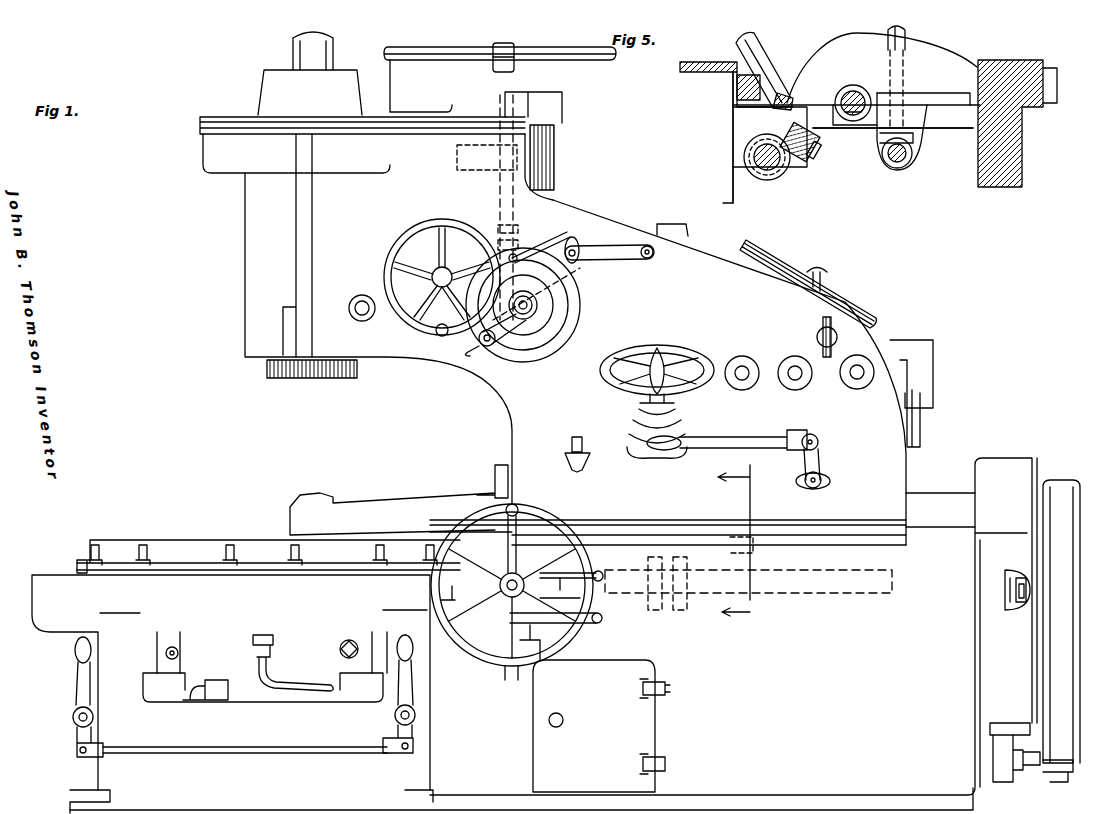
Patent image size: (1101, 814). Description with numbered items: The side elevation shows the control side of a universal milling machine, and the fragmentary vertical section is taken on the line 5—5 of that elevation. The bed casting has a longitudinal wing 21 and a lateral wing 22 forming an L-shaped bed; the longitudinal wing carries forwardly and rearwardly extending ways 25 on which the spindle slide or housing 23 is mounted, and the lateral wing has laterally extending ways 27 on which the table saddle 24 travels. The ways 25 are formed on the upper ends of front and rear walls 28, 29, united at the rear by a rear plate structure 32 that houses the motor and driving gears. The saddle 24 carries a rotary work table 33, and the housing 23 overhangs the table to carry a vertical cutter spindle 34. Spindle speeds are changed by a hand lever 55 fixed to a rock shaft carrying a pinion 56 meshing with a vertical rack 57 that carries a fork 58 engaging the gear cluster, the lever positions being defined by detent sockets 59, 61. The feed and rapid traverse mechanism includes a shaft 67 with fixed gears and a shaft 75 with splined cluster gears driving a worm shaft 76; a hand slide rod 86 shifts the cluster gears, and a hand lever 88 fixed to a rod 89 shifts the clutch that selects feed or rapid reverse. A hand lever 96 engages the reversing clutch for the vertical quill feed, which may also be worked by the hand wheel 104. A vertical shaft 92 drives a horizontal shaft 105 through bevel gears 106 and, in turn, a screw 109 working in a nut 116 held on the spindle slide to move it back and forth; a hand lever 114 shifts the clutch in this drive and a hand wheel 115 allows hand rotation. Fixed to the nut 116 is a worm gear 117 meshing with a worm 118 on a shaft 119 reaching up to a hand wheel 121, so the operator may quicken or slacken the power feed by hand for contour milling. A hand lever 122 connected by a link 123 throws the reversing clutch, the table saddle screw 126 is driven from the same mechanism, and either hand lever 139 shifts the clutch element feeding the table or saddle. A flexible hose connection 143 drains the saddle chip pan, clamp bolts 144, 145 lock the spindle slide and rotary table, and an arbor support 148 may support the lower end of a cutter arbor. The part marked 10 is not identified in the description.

In FIG. 1, the section line 5 is at (749, 544).
In FIG. 1, the pin 10 is at (533, 583).
In FIG. 1, the longitudinal wing 21 is at (522, 742).
In FIG. 1, the lateral wing 22 is at (95, 774).
In FIG. 1, the spindle slide 23 is at (703, 244).
In FIG. 5, the spindle slide 23 is at (1050, 60).
In FIG. 1, the table saddle 24 is at (45, 586).
In FIG. 1, the ways 25 is at (927, 498).
In FIG. 5, the ways 25 is at (1030, 50).
In FIG. 1, the ways 27 is at (157, 655).
In FIG. 1, the front wall 28 is at (651, 726).
In FIG. 5, the front wall 28 is at (733, 176).
In FIG. 5, the rear wall 29 is at (1022, 133).
In FIG. 1, the rear plate structure 32 is at (993, 632).
In FIG. 1, the rotary work table 33 is at (860, 75).
In FIG. 5, the rotary work table 33 is at (853, 93).
In FIG. 1, the vertical cutter spindle 34 is at (305, 379).
In FIG. 1, the hand lever 55 is at (495, 345).
In FIG. 1, the pinion 56 is at (548, 291).
In FIG. 1, the vertical rack 57 is at (562, 250).
In FIG. 1, the fork 58 is at (451, 157).
In FIG. 1, the detent socket 59 is at (573, 320).
In FIG. 1, the detent socket 61 is at (539, 245).
In FIG. 1, the shaft 67 is at (742, 366).
In FIG. 1, the shaft 75 is at (795, 366).
In FIG. 1, the worm shaft 76 is at (858, 372).
In FIG. 1, the hand slide rod 86 is at (820, 334).
In FIG. 1, the hand lever 88 is at (742, 434).
In FIG. 1, the rod 89 is at (820, 442).
In FIG. 5, the vertical shaft 92 is at (906, 33).
In FIG. 1, the hand lever 96 is at (590, 250).
In FIG. 1, the hand wheel 104 is at (435, 224).
In FIG. 1, the horizontal shaft 105 is at (932, 155).
In FIG. 5, the horizontal shaft 105 is at (906, 152).
In FIG. 5, the bevel gears 106 is at (925, 132).
In FIG. 1, the screw 109 is at (862, 595).
In FIG. 5, the screw 109 is at (778, 160).
In FIG. 1, the hand lever 114 is at (560, 589).
In FIG. 1, the hand wheel 115 is at (510, 678).
In FIG. 1, the nut 116 is at (753, 550).
In FIG. 1, the worm gear 117 is at (654, 594).
In FIG. 5, the worm 118 is at (818, 145).
In FIG. 5, the shaft 119 is at (760, 50).
In FIG. 1, the hand wheel 121 is at (605, 376).
In FIG. 1, the hand lever 122 is at (600, 618).
In FIG. 1, the link 123 is at (540, 658).
In FIG. 1, the table saddle screw 126 is at (340, 648).
In FIG. 1, the hand lever 139 is at (556, 143).
In FIG. 1, the flexible hose connection 143 is at (320, 695).
In FIG. 1, the clamp bolt 144 is at (572, 441).
In FIG. 1, the clamp bolt 145 is at (82, 560).
In FIG. 1, the arbor support 148 is at (400, 505).